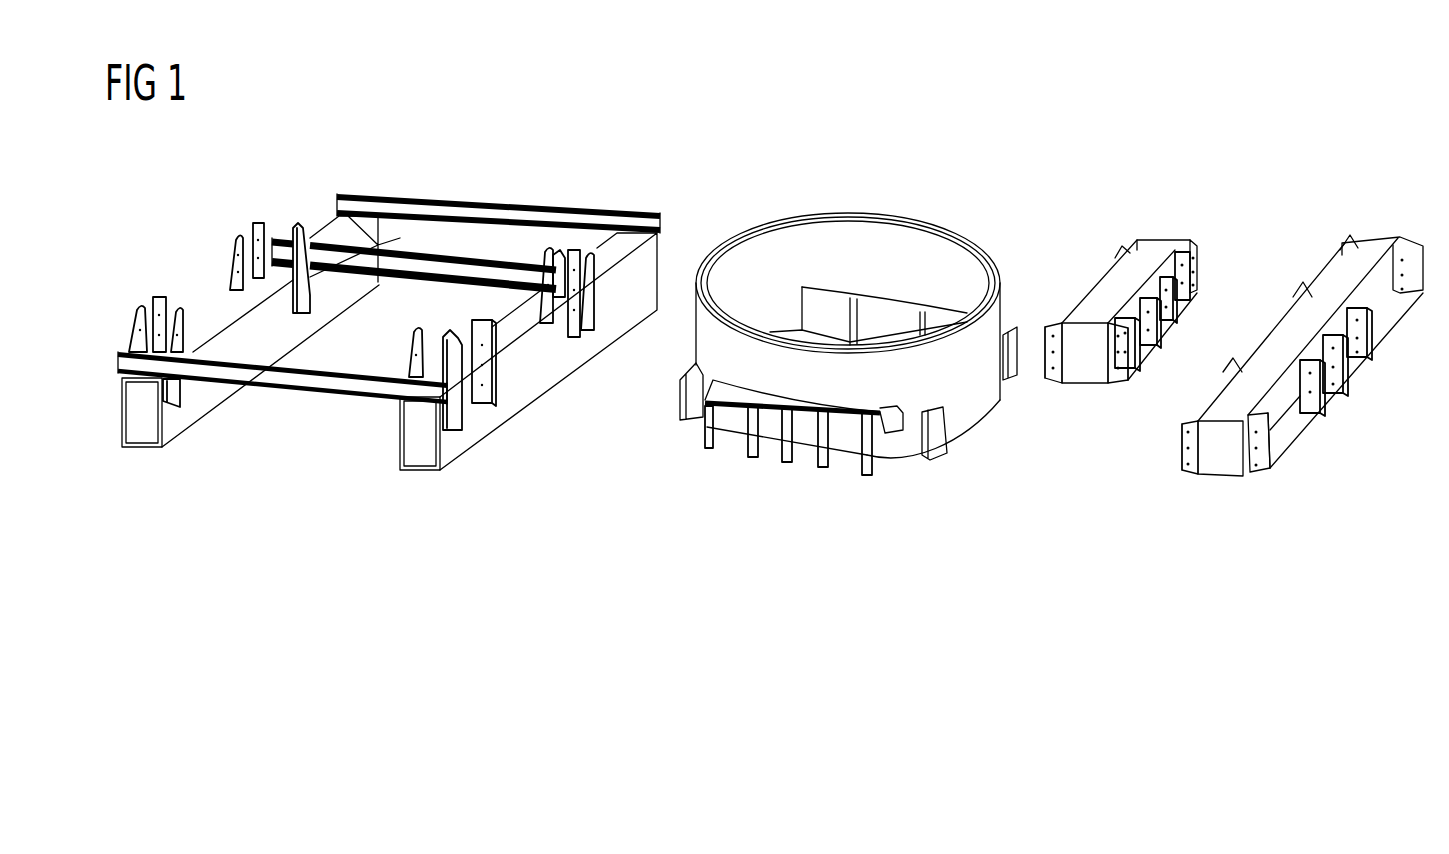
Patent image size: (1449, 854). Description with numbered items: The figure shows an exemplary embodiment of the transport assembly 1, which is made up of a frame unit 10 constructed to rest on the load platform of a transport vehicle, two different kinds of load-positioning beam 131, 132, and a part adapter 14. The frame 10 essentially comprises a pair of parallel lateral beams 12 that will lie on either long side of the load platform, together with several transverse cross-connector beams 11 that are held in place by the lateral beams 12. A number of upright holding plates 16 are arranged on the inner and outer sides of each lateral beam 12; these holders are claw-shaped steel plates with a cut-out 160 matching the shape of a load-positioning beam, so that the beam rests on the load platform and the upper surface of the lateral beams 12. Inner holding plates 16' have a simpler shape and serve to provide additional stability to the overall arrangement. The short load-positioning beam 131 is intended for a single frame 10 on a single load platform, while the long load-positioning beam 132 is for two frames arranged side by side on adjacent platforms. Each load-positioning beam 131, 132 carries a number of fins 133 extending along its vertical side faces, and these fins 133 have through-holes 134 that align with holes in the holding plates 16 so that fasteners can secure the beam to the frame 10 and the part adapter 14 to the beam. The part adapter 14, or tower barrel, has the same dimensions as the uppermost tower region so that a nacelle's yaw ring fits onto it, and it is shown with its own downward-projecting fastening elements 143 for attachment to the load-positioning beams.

The transport assembly 1 is at (873, 132).
The frame unit 10 is at (525, 180).
The cross-connector beams 11 is at (472, 266).
The lateral beams 12 is at (215, 318).
The holding plates 16 is at (371, 327).
The inner holding plates 16' is at (288, 333).
The cut-out 160 is at (566, 305).
The part adapter 14 is at (977, 255).
The hanging fastening legs 143 is at (716, 450).
The short load-positioning beam 131 is at (1110, 283).
The long load-positioning beam 132 is at (1338, 277).
The fins 133 is at (1188, 275).
The through-holes 134 is at (1182, 465).